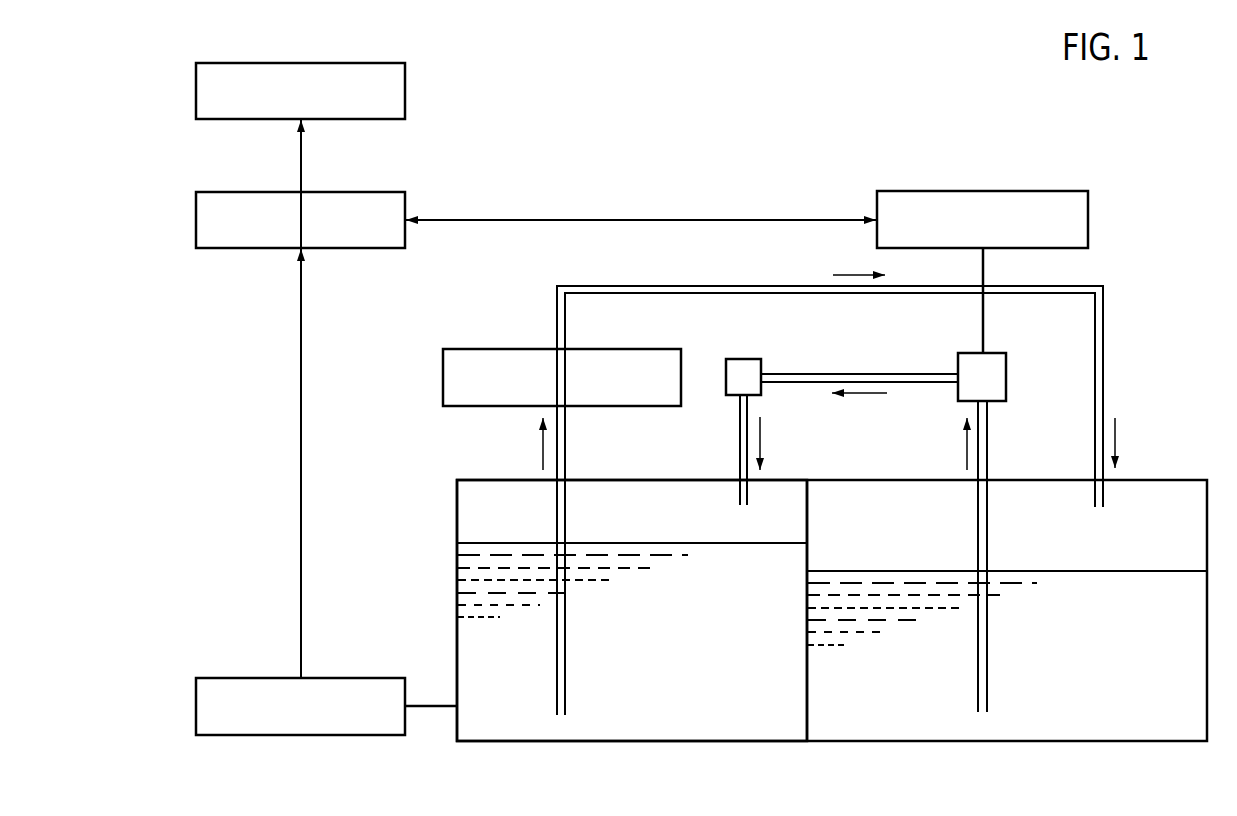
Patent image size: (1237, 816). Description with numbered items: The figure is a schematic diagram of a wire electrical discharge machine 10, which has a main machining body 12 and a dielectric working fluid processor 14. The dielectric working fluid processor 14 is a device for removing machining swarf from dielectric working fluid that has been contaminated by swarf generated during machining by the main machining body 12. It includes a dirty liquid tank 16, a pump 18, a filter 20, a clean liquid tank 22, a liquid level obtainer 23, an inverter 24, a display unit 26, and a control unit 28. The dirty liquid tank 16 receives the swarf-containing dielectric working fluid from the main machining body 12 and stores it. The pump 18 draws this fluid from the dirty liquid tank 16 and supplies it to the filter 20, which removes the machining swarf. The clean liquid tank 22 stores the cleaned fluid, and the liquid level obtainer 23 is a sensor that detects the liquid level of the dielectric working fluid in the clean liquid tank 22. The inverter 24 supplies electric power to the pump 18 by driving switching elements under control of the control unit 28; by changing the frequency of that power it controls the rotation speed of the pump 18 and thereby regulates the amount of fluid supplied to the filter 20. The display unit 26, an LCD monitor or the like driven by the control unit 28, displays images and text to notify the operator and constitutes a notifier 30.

The wire electrical discharge machine 10 is at (1161, 115).
The main machining body 12 is at (510, 349).
The dielectric working fluid processor 14 is at (1136, 264).
The dirty liquid tank 16 is at (1178, 480).
The pump 18 is at (966, 353).
The filter 20 is at (739, 359).
The clean liquid tank 22 is at (467, 480).
The liquid level obtainer 23 is at (378, 678).
The inverter 24 is at (1023, 191).
The display unit 26 is at (321, 73).
The control unit 28 is at (378, 192).
The notifier 30 is at (378, 63).